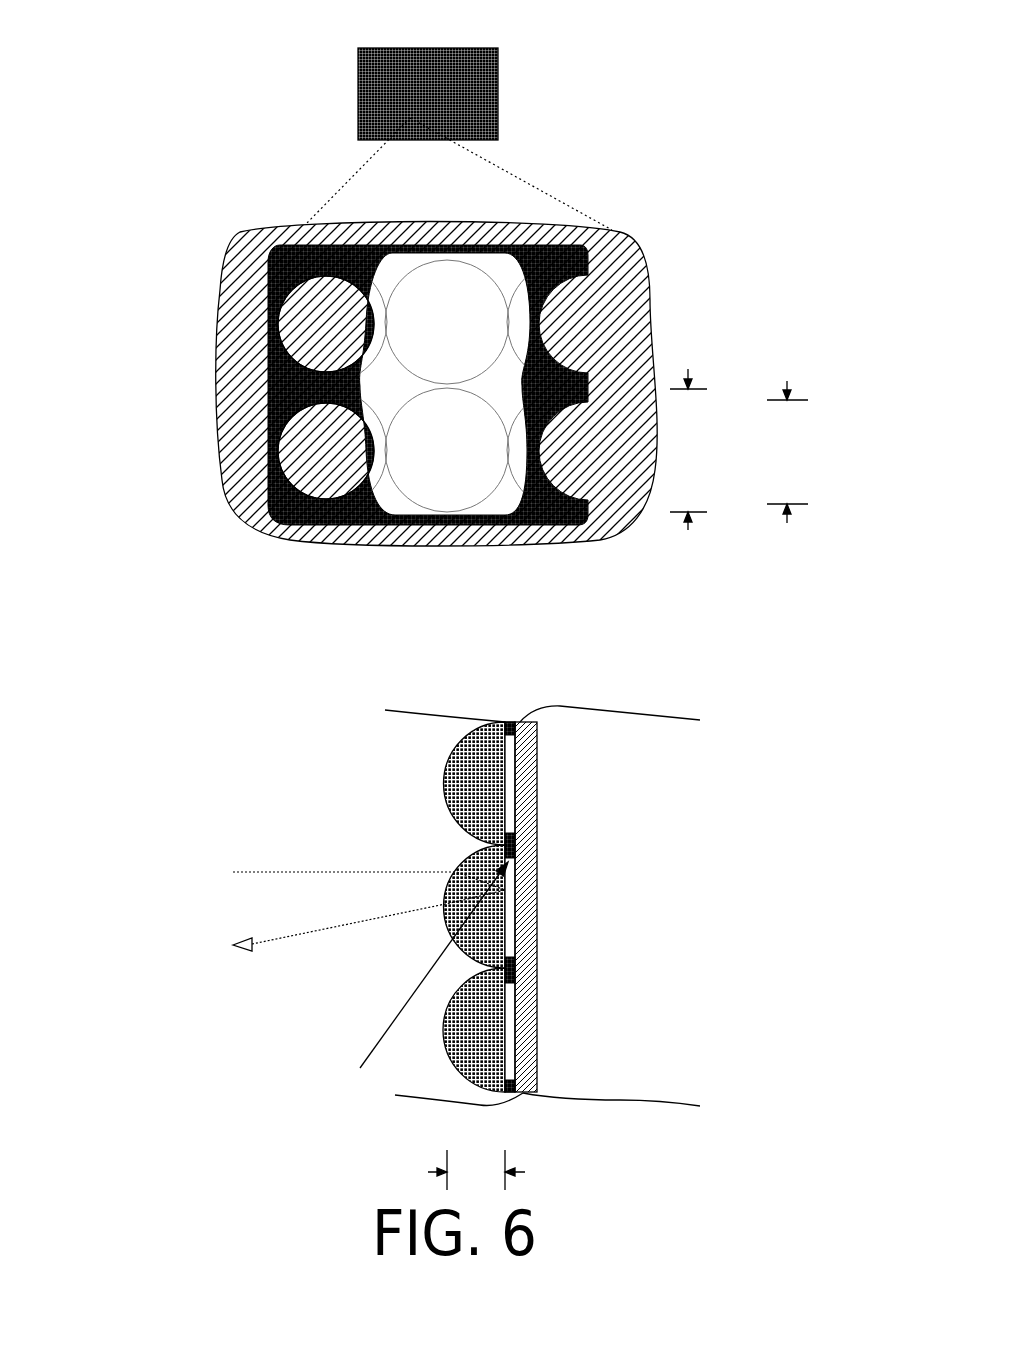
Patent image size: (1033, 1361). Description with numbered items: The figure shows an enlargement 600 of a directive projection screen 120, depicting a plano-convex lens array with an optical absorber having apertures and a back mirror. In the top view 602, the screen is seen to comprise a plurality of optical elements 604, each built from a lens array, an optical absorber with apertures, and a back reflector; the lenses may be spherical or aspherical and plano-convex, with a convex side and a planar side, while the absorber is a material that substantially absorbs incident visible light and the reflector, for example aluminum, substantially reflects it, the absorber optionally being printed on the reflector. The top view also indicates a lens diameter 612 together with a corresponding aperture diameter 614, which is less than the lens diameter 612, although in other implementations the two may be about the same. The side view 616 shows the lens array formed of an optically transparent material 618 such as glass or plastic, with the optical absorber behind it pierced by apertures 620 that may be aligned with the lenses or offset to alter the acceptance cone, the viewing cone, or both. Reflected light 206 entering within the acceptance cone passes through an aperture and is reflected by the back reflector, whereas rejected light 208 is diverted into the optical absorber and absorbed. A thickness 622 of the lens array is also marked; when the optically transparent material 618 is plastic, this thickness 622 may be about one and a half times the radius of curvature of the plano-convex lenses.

The enlargement 600 is at (750, 33).
The directive projection screen (portable) 120 is at (498, 78).
The top view 602 is at (457, 386).
The optical elements 604 is at (216, 524).
The lens diameter 612 is at (683, 489).
The aperture diameter 614 is at (780, 495).
The side view 616 is at (425, 885).
The optically transparent material 618 is at (460, 778).
The apertures 620 is at (510, 797).
The thickness 622 is at (370, 1168).
The reflected light 206 is at (309, 894).
The rejected light 208 is at (385, 996).